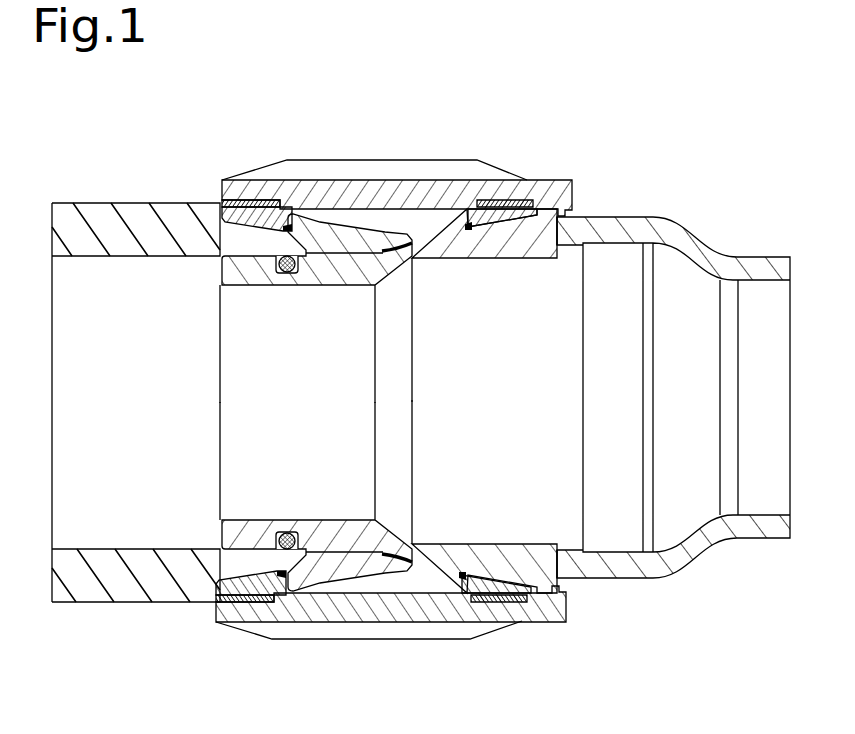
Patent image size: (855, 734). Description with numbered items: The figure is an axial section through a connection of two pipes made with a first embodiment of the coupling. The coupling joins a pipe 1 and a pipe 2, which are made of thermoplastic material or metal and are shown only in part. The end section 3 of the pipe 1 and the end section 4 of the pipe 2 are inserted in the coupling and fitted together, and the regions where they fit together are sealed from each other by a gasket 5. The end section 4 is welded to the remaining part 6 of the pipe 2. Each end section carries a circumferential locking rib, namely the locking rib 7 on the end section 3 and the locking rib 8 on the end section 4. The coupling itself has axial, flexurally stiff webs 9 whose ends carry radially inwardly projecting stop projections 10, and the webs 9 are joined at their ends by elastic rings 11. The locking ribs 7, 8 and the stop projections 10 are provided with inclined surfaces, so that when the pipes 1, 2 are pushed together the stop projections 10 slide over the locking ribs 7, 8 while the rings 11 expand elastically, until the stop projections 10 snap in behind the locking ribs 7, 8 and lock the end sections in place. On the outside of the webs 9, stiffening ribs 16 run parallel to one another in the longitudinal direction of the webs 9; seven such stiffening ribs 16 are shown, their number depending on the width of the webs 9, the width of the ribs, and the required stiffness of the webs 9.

The pipe 1 is at (130, 190).
The pipe 2 is at (591, 188).
The end section 3 is at (347, 243).
The end section 4 is at (505, 247).
The gasket 5 is at (280, 273).
The remaining part of the pipe 6 is at (680, 240).
The locking rib 7 is at (305, 233).
The locking rib 8 is at (437, 210).
The web 9 is at (216, 187).
The stop projection 10 is at (283, 229).
The elastic ring 11 is at (258, 190).
The stiffening rib 16 is at (388, 162).